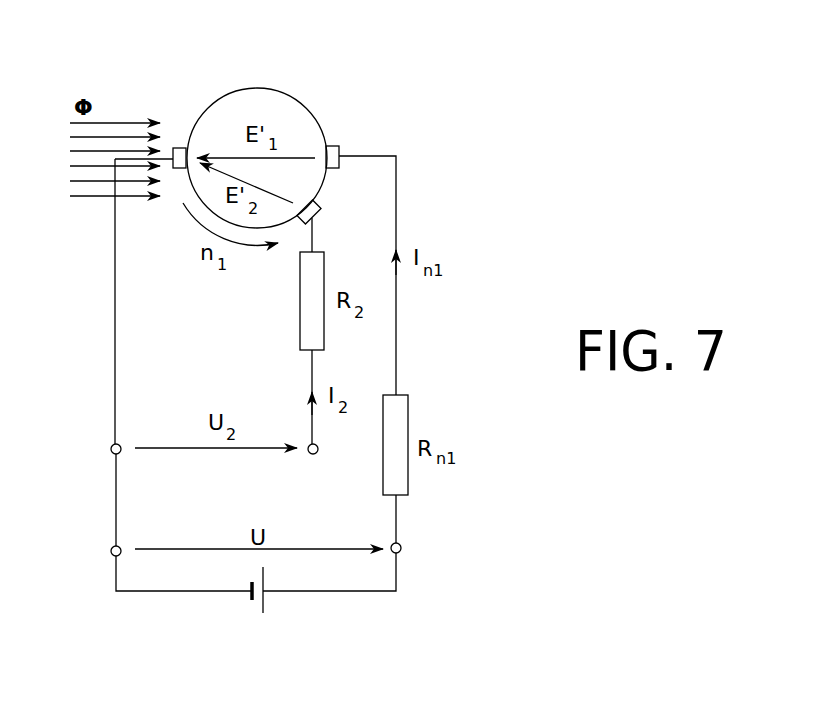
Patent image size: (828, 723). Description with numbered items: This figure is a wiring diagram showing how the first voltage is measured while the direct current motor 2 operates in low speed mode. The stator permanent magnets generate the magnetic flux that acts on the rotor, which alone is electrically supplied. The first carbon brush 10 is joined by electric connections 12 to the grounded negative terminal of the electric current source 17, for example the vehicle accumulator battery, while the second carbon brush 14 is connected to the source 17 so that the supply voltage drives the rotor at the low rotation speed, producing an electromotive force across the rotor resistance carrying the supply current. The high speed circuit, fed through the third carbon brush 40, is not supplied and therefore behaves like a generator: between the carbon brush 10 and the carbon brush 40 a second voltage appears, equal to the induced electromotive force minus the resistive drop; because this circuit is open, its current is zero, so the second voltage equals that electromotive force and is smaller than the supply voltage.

The motor 2 is at (237, 88).
The first carbon brush 10 is at (178, 148).
The second carbon brush 14 is at (332, 146).
The third carbon brush 40 is at (316, 203).
The electric connections 12 is at (111, 551).
The electric current source 17 is at (268, 600).